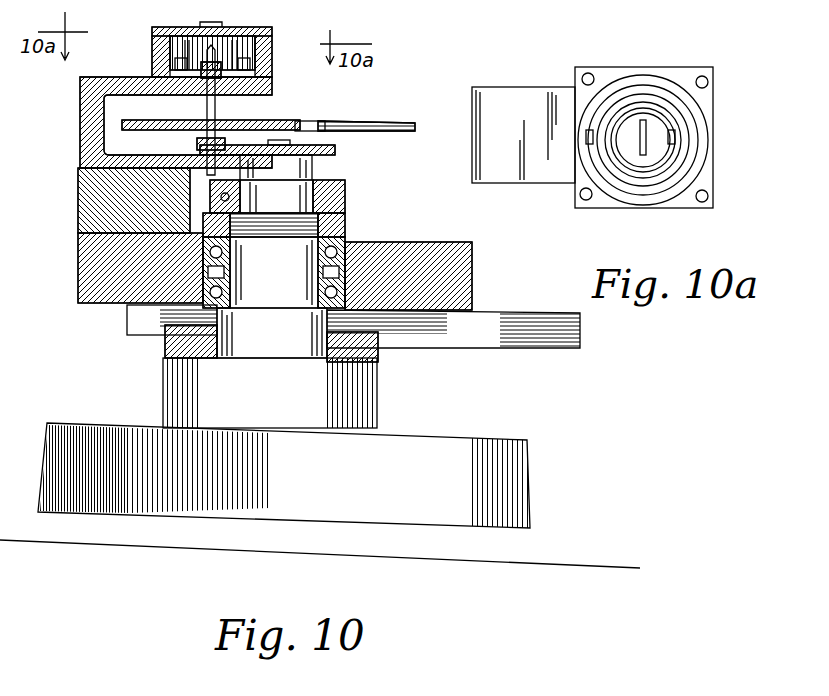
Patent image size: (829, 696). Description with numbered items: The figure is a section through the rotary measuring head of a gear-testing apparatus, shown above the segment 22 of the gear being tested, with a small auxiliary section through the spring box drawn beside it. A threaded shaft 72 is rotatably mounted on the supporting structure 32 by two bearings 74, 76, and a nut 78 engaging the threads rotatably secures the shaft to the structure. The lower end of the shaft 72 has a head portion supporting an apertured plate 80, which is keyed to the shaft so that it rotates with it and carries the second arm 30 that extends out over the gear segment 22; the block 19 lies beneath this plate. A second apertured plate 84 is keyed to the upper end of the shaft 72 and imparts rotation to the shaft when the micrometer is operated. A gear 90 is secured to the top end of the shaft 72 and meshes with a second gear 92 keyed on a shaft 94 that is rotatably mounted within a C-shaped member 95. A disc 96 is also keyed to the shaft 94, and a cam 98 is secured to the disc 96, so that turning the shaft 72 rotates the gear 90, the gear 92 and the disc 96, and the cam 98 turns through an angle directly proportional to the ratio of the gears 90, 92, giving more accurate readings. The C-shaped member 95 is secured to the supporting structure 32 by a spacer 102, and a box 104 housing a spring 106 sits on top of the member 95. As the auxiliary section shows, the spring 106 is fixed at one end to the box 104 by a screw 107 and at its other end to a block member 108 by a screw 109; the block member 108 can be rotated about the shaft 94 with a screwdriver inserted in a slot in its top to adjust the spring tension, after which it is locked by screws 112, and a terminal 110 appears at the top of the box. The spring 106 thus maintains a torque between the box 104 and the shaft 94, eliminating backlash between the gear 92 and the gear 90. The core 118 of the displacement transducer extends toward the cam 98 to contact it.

In FIG. 10, the support block 19 is at (355, 410).
In FIG. 10, the segment of a gear 22 is at (465, 450).
In FIG. 10, the second arm 30 is at (496, 340).
In FIG. 10, the supporting structure 32 is at (472, 276).
In FIG. 10, the shaft 72 is at (200, 333).
In FIG. 10, the bearing 74 is at (348, 238).
In FIG. 10, the bearing 76 is at (318, 312).
In FIG. 10, the nut 78 is at (345, 208).
In FIG. 10, the apertured plate 80 is at (372, 350).
In FIG. 10, the second apertured plate 84 is at (318, 184).
In FIG. 10, the gear 90 is at (322, 152).
In FIG. 10, the second gear 92 is at (197, 145).
In FIG. 10, the shaft 94 is at (220, 95).
In FIG. 10, the C-shaped member 95 is at (82, 158).
In FIG. 10a, the C-shaped member 95 is at (487, 88).
In FIG. 10, the disc 96 is at (163, 118).
In FIG. 10, the cam 98 is at (297, 121).
In FIG. 10, the spacer 102 is at (95, 210).
In FIG. 10, the box 104 is at (272, 70).
In FIG. 10a, the box 104 is at (682, 200).
In FIG. 10, the spring 106 is at (205, 36).
In FIG. 10a, the spring 106 is at (633, 185).
In FIG. 10, the screw 107 is at (160, 66).
In FIG. 10a, the screw 107 is at (590, 128).
In FIG. 10, the block member 108 is at (165, 44).
In FIG. 10a, the block member 108 is at (635, 122).
In FIG. 10, the screw 109 is at (262, 62).
In FIG. 10a, the screw 109 is at (674, 130).
In FIG. 10, the terminal 110 is at (185, 28).
In FIG. 10, the screws 112 is at (255, 40).
In FIG. 10, the core 118 is at (392, 121).